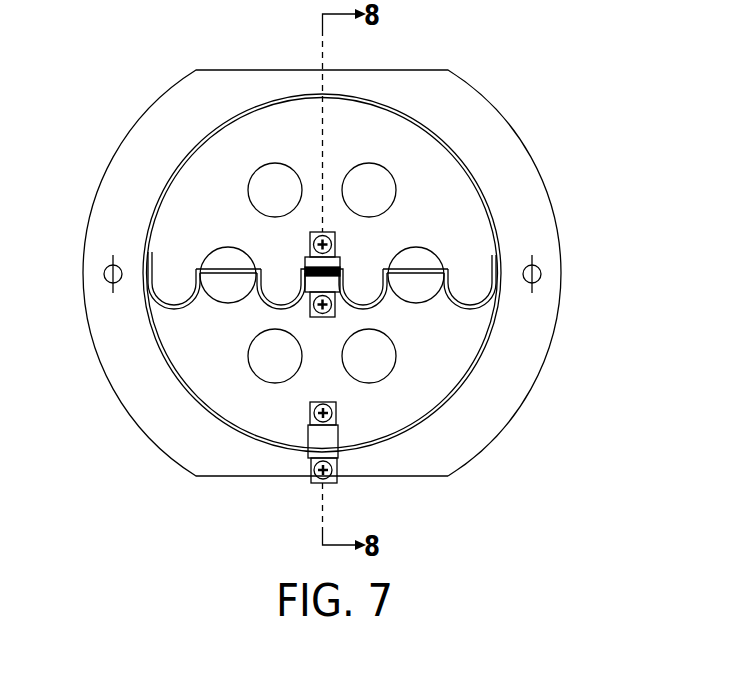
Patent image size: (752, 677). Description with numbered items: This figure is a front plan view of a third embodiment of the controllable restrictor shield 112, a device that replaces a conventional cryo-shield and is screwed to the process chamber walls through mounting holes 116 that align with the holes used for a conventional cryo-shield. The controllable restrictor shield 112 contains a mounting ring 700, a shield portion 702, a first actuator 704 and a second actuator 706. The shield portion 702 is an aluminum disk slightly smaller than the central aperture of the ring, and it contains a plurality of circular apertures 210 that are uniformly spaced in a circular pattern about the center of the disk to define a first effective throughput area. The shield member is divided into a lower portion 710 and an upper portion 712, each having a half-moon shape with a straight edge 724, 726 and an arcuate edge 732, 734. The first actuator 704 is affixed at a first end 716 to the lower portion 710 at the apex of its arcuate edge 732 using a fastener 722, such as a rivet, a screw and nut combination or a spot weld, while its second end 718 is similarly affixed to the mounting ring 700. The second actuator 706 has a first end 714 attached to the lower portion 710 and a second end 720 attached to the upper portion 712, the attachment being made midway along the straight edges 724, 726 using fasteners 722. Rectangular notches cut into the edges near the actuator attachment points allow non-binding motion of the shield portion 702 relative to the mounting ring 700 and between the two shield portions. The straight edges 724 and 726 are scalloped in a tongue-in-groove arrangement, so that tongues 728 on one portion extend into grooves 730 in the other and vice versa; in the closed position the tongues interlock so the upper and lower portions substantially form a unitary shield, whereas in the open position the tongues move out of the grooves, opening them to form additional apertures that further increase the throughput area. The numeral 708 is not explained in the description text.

The controllable restrictor shield 112 is at (523, 101).
The mounting holes 116 is at (106, 268).
The apertures 210 is at (248, 190).
The mounting ring 700 is at (493, 438).
The shield portion 702 is at (528, 212).
The first actuator 704 is at (336, 456).
The second actuator 706 is at (370, 270).
The clamp body lower left portion 708 is at (222, 428).
The lower portion 710 is at (476, 358).
The upper portion 712 is at (468, 170).
The first end 714 is at (341, 316).
The first end 716 is at (336, 406).
The second end 718 is at (320, 484).
The second end 720 is at (316, 234).
The fastener 722 is at (328, 238).
The straight edge 724 is at (200, 276).
The straight edge 726 is at (212, 229).
The tongues 728 is at (288, 277).
The grooves 730 is at (158, 314).
The arcuate edge 732 is at (485, 355).
The arcuate edge 734 is at (478, 162).